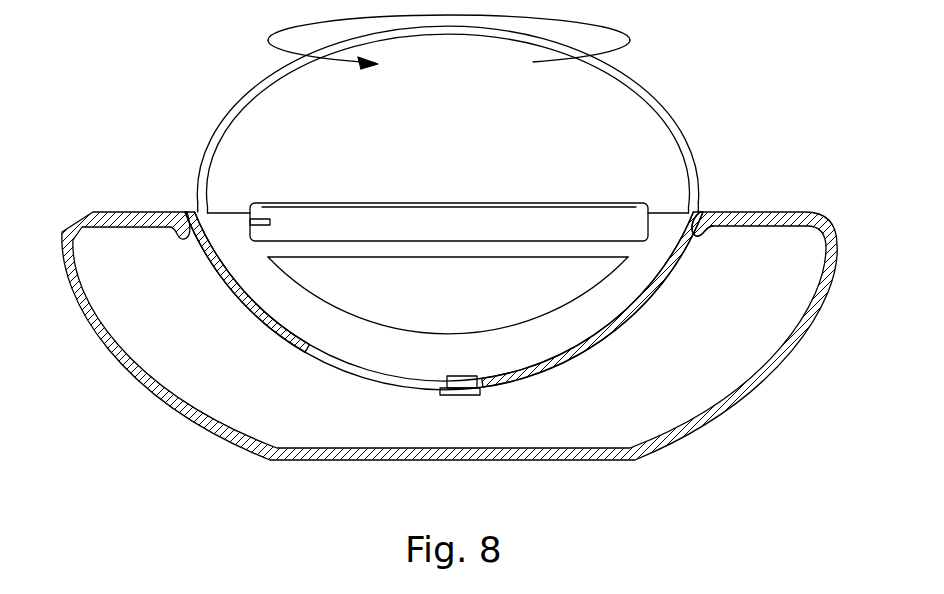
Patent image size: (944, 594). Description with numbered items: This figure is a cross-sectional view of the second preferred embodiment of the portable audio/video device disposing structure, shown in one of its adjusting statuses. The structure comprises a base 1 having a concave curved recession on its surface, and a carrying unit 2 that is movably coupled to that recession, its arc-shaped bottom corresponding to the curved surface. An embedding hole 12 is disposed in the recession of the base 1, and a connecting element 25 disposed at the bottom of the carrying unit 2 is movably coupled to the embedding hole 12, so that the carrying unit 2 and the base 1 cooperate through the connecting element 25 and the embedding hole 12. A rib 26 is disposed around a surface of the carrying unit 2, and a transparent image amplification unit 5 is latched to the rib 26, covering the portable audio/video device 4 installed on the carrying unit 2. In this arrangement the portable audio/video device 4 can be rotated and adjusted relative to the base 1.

The base 1 is at (780, 360).
The carrying unit 2 is at (165, 229).
The portable audio/video device 4 is at (303, 217).
The transparent image amplification unit 5 is at (681, 132).
The embedding hole 12 is at (345, 365).
The connecting element 25 is at (458, 384).
The rib 26 is at (700, 212).